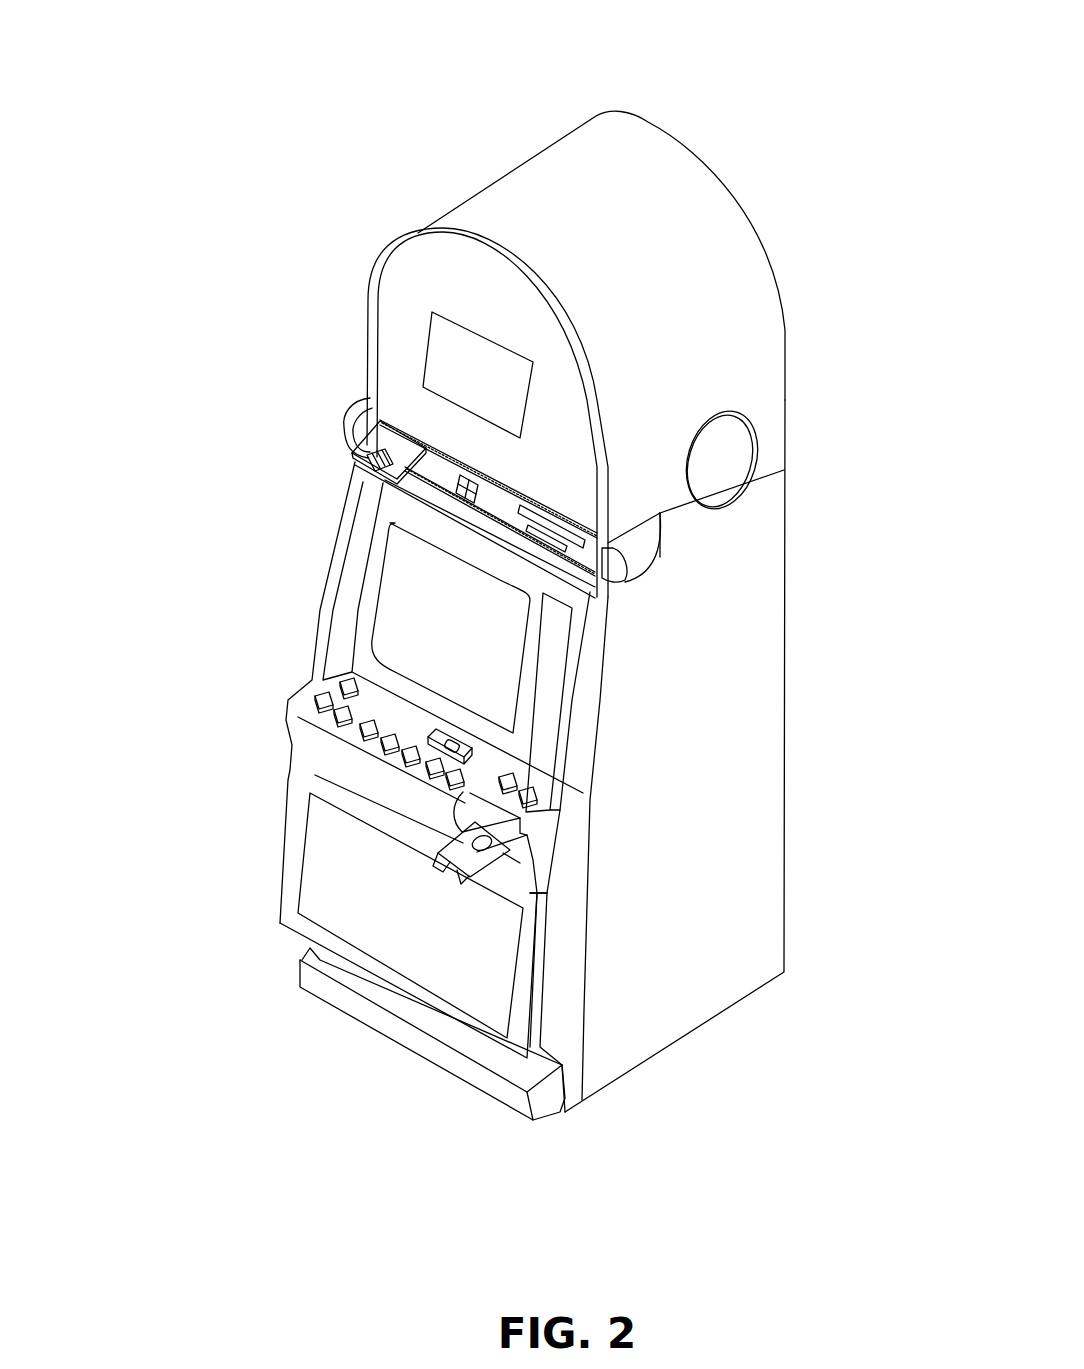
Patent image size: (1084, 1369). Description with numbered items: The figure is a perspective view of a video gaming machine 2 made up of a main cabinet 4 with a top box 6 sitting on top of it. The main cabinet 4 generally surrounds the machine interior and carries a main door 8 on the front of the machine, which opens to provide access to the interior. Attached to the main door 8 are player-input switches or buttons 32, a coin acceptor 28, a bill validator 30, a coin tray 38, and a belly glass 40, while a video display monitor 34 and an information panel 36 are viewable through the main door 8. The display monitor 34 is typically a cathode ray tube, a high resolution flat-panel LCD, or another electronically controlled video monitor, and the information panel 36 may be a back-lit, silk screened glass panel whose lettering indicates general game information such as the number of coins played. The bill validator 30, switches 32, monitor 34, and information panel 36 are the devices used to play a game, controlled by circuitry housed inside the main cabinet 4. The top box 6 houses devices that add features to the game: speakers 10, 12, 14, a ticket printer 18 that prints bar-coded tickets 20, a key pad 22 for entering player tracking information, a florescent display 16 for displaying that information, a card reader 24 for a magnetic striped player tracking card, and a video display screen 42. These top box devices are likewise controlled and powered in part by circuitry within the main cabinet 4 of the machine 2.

The video gaming machine 2 is at (787, 97).
The main cabinet 4 is at (708, 798).
The top box 6 is at (672, 302).
The main door 8 is at (553, 997).
The speaker 10 is at (722, 460).
The speaker 12 is at (613, 560).
The speaker 14 is at (360, 403).
The florescent display 16 is at (570, 524).
The ticket printer 18 is at (375, 434).
The bar-coded ticket 20 is at (353, 455).
The key pad 22 is at (392, 405).
The card reader 24 is at (630, 583).
The coin acceptor 28 is at (472, 750).
The bill validator 30 is at (520, 855).
The player-input switches 32 is at (395, 736).
The video display monitor 34 is at (385, 623).
The information panel 36 is at (553, 649).
The coin tray 38 is at (542, 1102).
The belly glass 40 is at (333, 885).
The video display screen 42 is at (475, 383).